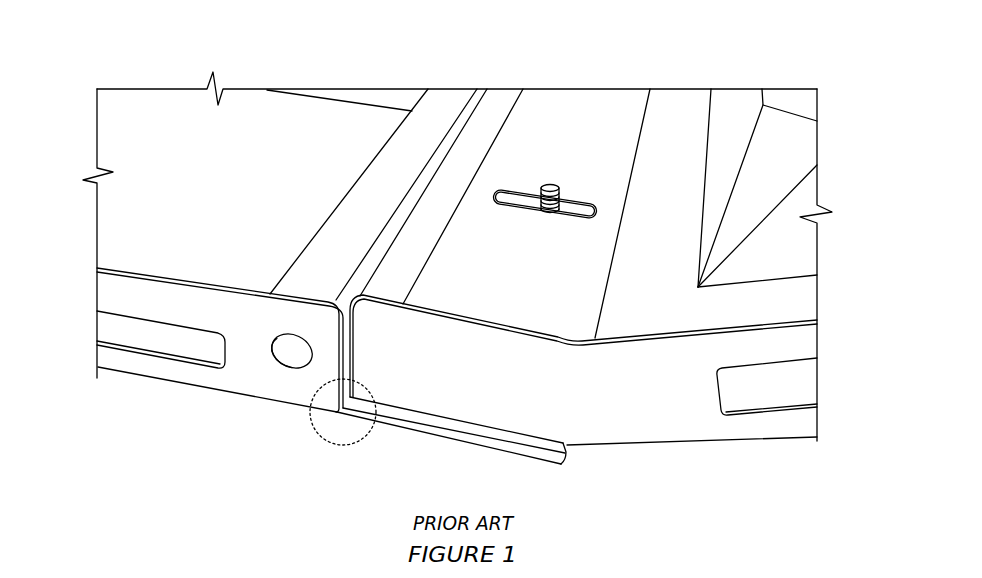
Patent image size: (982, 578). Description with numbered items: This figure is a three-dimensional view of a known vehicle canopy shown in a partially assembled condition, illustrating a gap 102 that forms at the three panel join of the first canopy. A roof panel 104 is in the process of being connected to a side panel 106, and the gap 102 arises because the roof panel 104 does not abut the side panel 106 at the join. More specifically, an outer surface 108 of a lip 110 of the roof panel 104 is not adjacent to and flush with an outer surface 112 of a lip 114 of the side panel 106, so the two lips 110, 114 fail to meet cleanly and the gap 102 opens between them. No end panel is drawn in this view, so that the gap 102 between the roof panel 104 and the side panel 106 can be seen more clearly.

The gap 102 is at (327, 438).
The roof panel 104 is at (301, 179).
The side panel 106 is at (757, 193).
The outer surface 108 is at (263, 370).
The lip 110 is at (150, 303).
The outer surface 112 is at (452, 405).
The lip 114 is at (770, 345).